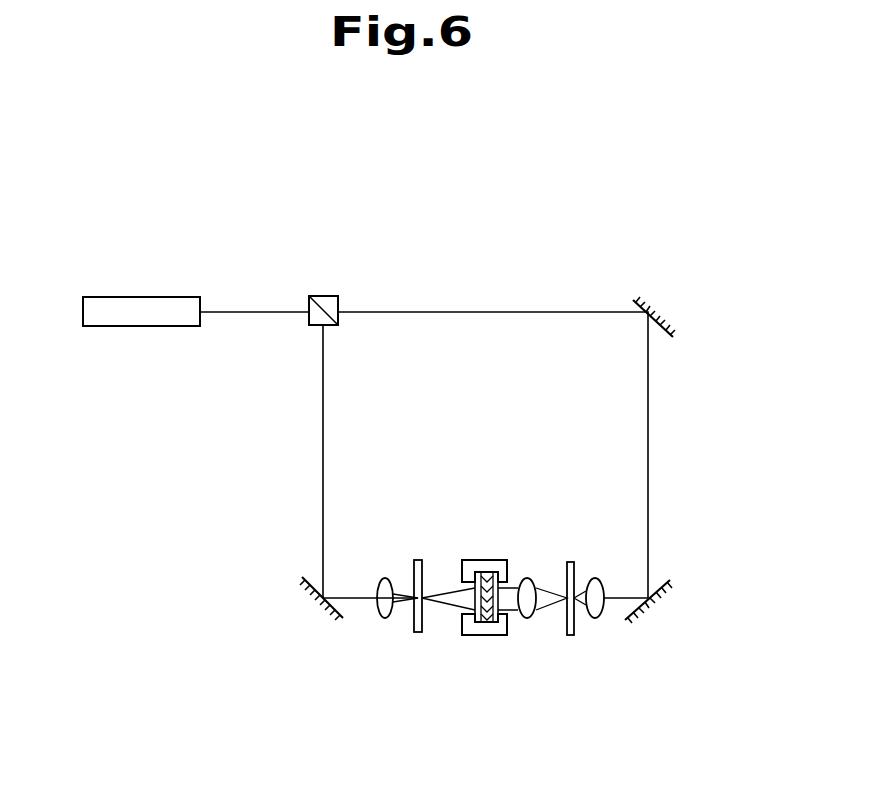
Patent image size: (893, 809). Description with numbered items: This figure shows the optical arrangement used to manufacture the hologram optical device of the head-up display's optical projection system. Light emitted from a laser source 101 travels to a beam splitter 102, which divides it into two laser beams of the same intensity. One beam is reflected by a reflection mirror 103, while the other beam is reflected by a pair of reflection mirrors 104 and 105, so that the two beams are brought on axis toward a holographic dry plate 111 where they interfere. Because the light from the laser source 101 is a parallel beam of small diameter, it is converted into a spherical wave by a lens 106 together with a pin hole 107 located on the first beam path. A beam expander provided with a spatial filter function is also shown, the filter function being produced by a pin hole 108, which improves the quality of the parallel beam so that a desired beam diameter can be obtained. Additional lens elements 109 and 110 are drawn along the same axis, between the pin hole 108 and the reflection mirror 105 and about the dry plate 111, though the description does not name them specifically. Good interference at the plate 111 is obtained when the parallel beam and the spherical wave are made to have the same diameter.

The laser source 101 is at (126, 305).
The beam splitter 102 is at (322, 293).
The reflection mirror 103 is at (306, 577).
The reflection mirror 104 is at (633, 300).
The reflection mirror 105 is at (655, 600).
The lens 106 is at (383, 610).
The pin hole 107 is at (421, 597).
The pin hole 108 is at (575, 572).
The lens 109 is at (530, 612).
The lens 110 is at (600, 612).
The holographic dry plate 111 is at (478, 630).